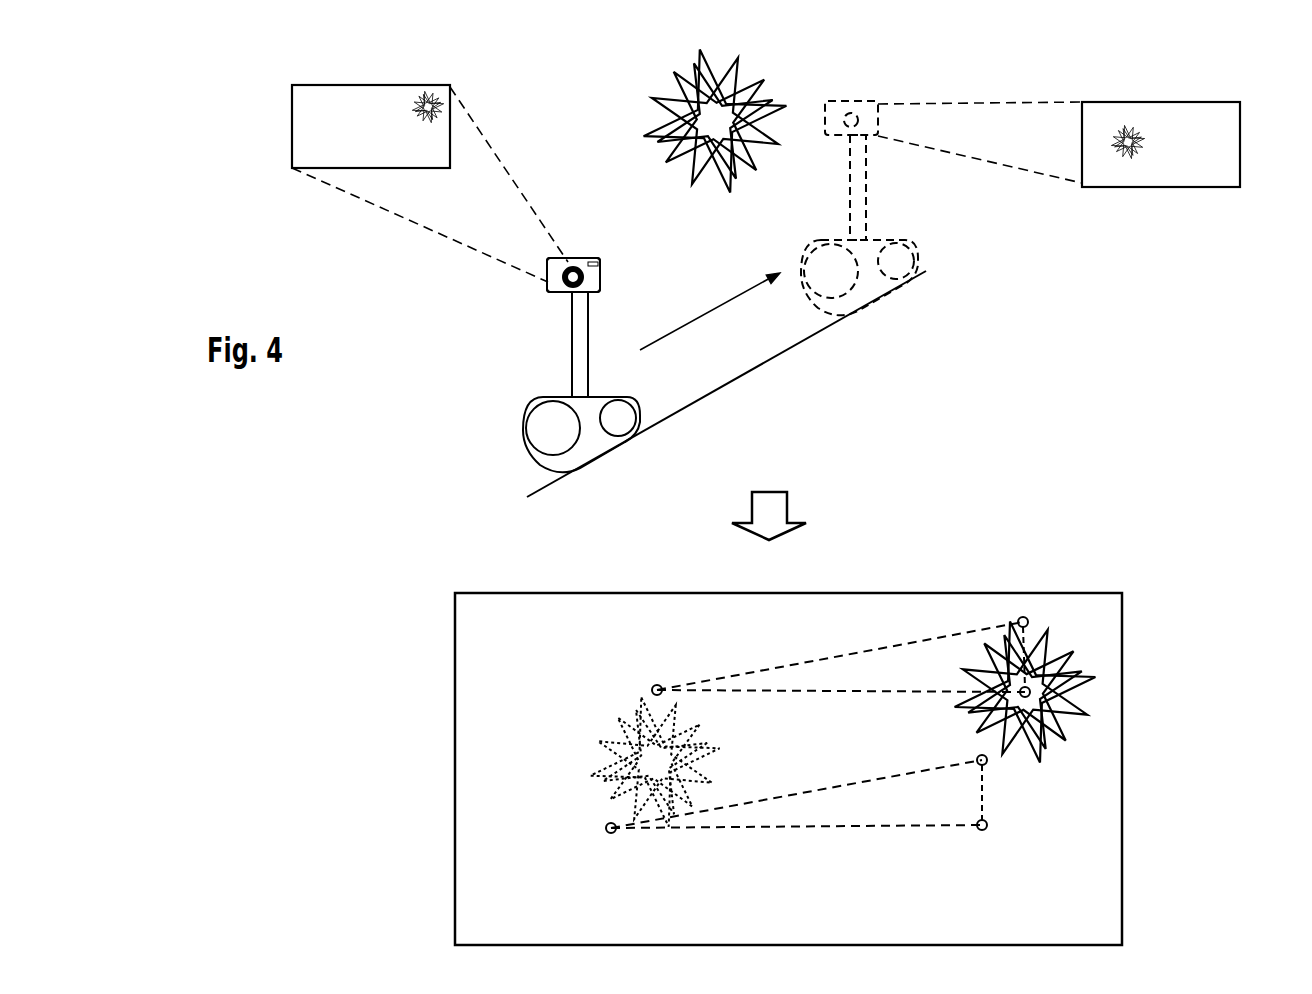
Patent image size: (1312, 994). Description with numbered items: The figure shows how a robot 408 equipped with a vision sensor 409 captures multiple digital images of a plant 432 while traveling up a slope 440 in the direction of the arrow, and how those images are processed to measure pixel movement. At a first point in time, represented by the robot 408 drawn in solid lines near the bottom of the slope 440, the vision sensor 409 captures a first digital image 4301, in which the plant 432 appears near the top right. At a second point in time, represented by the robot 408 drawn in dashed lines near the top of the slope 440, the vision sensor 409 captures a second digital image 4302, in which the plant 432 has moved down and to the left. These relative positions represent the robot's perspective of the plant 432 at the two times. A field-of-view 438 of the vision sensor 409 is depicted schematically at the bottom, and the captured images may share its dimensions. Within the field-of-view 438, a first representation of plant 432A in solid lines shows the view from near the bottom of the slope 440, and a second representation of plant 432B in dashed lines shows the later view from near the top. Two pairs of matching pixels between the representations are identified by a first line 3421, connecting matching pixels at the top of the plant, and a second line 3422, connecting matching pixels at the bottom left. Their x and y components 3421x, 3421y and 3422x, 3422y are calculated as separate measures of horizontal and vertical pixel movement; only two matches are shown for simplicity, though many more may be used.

The first digital image 4301 is at (490, 80).
The second digital image 4302 is at (1279, 130).
The plant 432 is at (626, 91).
The robot 408 is at (616, 348).
The vision sensor 409 is at (550, 291).
The slope 440 is at (722, 358).
The field-of-view 438 is at (455, 760).
The first representation of plant 432A is at (1085, 757).
The second representation of plant 432B is at (576, 740).
The first line 3421 is at (840, 656).
The x component of first line 3421x is at (843, 691).
The y component of first line 3421y is at (1044, 648).
The second line 3422 is at (796, 794).
The x component of second line 3422x is at (799, 829).
The y component of second line 3422y is at (982, 800).